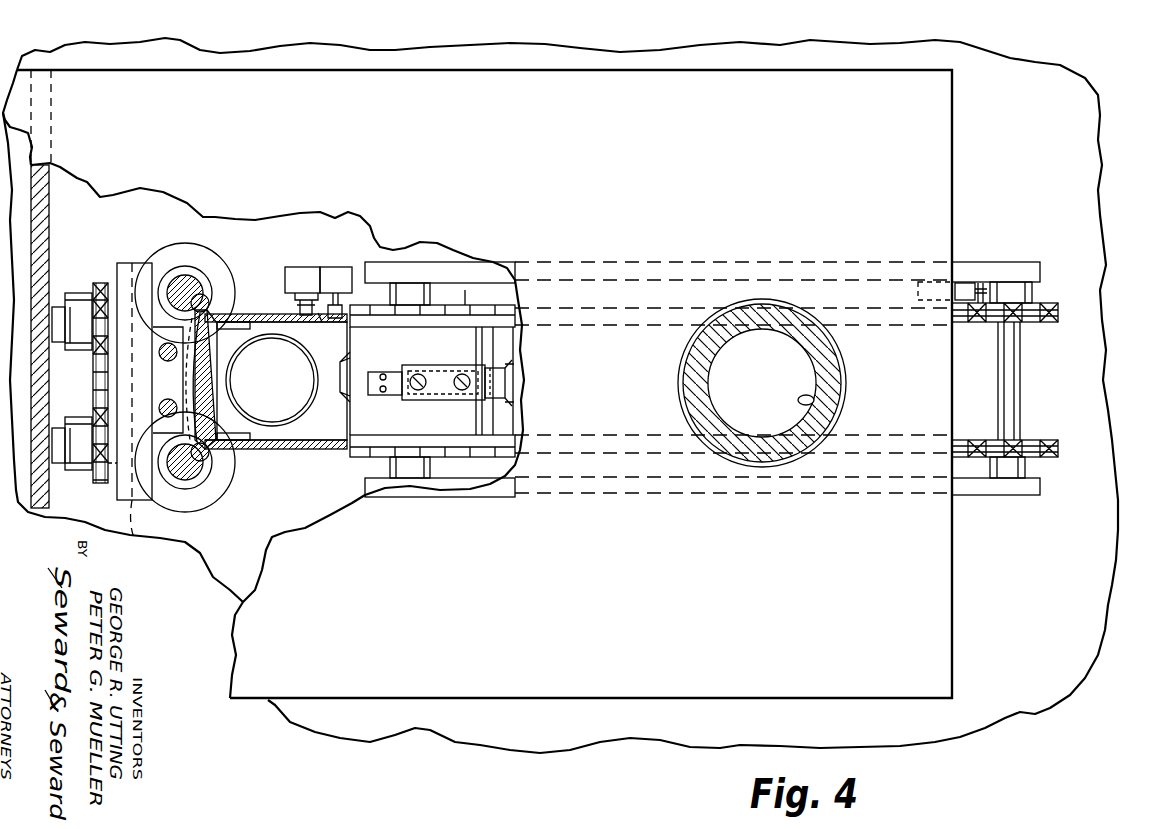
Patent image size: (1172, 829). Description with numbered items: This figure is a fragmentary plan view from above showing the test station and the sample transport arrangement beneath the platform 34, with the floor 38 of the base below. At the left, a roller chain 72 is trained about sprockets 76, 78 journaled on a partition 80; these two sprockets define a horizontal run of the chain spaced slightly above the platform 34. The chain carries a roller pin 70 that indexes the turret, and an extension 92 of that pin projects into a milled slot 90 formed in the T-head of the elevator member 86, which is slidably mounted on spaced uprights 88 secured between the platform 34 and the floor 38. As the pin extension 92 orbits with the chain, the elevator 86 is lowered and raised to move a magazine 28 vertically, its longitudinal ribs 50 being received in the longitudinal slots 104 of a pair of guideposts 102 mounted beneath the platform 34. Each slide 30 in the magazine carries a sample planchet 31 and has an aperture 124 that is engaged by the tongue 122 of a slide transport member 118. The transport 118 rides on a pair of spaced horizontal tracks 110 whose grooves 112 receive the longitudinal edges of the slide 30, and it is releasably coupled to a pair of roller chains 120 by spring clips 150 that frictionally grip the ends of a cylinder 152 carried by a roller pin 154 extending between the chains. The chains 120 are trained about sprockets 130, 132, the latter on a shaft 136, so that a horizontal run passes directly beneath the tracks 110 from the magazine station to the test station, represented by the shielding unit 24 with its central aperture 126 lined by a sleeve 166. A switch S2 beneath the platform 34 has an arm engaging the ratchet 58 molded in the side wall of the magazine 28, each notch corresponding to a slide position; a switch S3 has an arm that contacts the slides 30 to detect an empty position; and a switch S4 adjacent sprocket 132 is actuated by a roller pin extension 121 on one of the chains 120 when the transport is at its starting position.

The shielding unit 24 is at (857, 397).
The magazine 28 is at (260, 308).
The slide 30 is at (292, 450).
The sample planchet 31 is at (284, 381).
The platform 34 is at (782, 623).
The floor 38 is at (1090, 637).
The longitudinal ribs 50 is at (205, 290).
The ratchet 58 is at (318, 315).
The roller pin 70 is at (80, 470).
The roller chain 72 is at (93, 370).
The sprocket 76 is at (80, 418).
The sprocket 78 is at (80, 300).
The partition 80 is at (50, 232).
The elevator member 86 is at (136, 252).
The uprights 88 is at (178, 400).
The slot 90 is at (168, 252).
The pin extension 92 is at (135, 540).
The guideposts 102 is at (193, 244).
The longitudinal slot 104 is at (206, 298).
The horizontal tracks 110 is at (396, 320).
The grooves 112 is at (590, 262).
The slide transport member 118 is at (465, 437).
The roller chains 120 is at (1040, 322).
The roller pin extension 121 is at (985, 284).
The tongue 122 is at (340, 392).
The aperture 124 is at (346, 365).
The central aperture 126 is at (778, 386).
The sprocket 130 is at (420, 292).
The sprocket 132 is at (1035, 295).
The shaft 136 is at (1012, 380).
The spring clips 150 is at (508, 363).
The cylinder 152 is at (507, 383).
The roller pin 154 is at (500, 422).
The sleeve 166 is at (814, 402).
The switch S2 is at (300, 267).
The switch S3 is at (336, 267).
The switch S4 is at (930, 290).